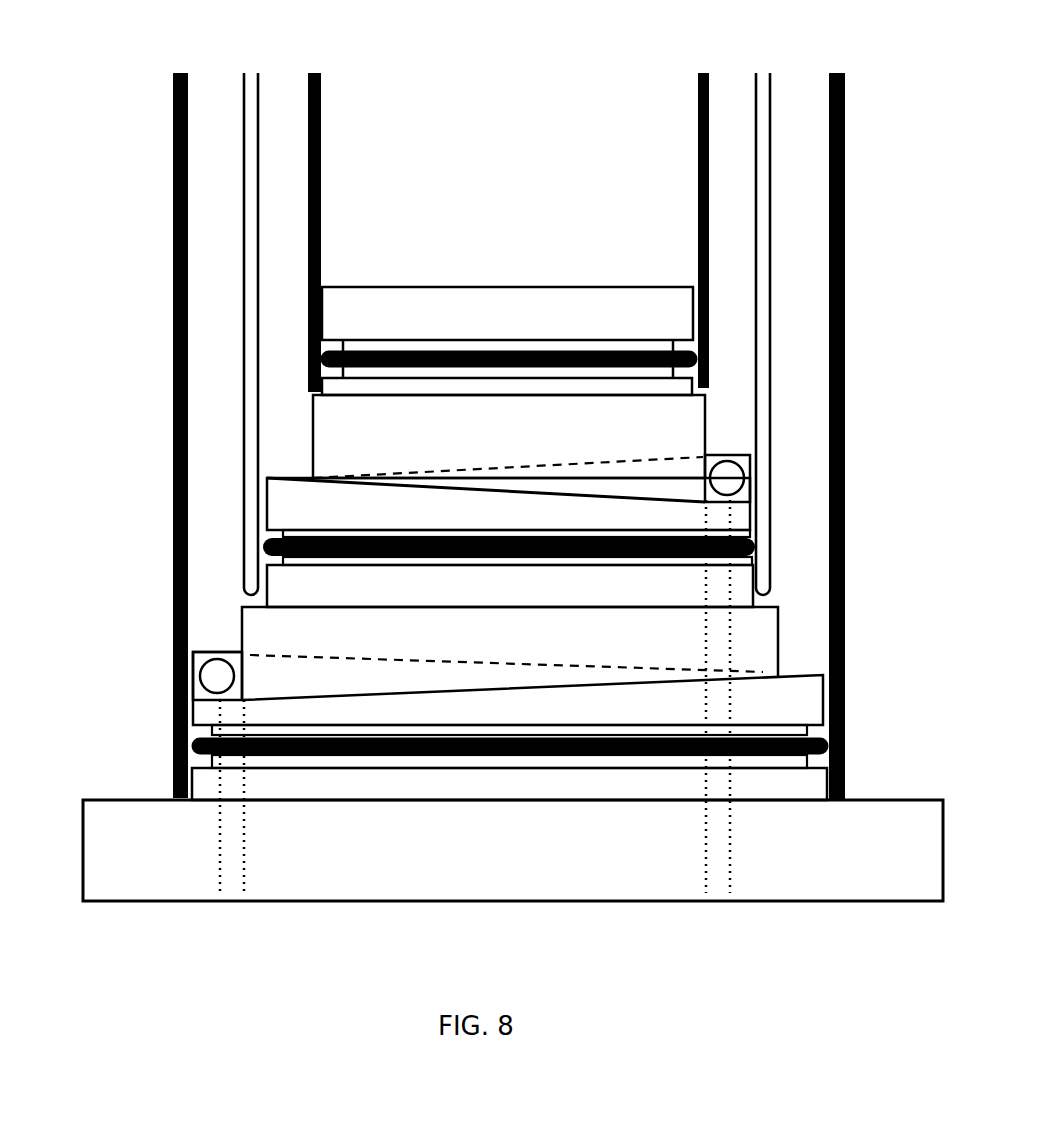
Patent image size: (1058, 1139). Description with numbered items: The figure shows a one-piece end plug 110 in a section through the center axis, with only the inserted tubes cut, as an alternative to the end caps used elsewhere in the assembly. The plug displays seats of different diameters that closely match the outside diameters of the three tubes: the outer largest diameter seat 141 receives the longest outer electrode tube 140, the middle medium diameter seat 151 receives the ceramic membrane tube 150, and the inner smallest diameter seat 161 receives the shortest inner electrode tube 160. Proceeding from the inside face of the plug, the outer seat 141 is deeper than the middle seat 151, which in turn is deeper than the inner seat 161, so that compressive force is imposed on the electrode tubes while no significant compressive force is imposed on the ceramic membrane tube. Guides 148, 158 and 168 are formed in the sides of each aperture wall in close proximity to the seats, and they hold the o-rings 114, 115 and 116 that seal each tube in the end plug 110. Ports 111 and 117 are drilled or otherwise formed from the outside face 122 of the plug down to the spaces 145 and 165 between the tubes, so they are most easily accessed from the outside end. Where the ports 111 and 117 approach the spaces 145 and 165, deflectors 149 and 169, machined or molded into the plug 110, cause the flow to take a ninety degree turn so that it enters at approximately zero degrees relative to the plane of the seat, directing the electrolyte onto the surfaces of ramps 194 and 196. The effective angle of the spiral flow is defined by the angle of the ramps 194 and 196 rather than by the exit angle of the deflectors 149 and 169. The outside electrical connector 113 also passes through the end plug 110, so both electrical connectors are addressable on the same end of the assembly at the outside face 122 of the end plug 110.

The end plug 110 is at (373, 928).
The port 111 is at (717, 878).
The outside electrical connector 113 is at (128, 801).
The o-ring 114 is at (830, 746).
The o-ring 115 is at (758, 528).
The o-ring 116 is at (709, 337).
The port 117 is at (235, 882).
The outside face 122 is at (601, 905).
The outer electrode tube 140 is at (836, 72).
The outer largest diameter seat 141 is at (845, 796).
The space between tubes 145 is at (216, 103).
The guide 148 is at (190, 750).
The deflector 149 is at (190, 657).
The ceramic membrane tube 150 is at (764, 88).
The middle medium diameter seat 151 is at (777, 600).
The guide 158 is at (265, 560).
The inner electrode tube 160 is at (702, 72).
The inner smallest diameter seat 161 is at (315, 395).
The space between tubes 165 is at (284, 106).
The guide 168 is at (330, 345).
The deflector 169 is at (750, 456).
The ramp 194 is at (810, 672).
The ramp 196 is at (290, 475).